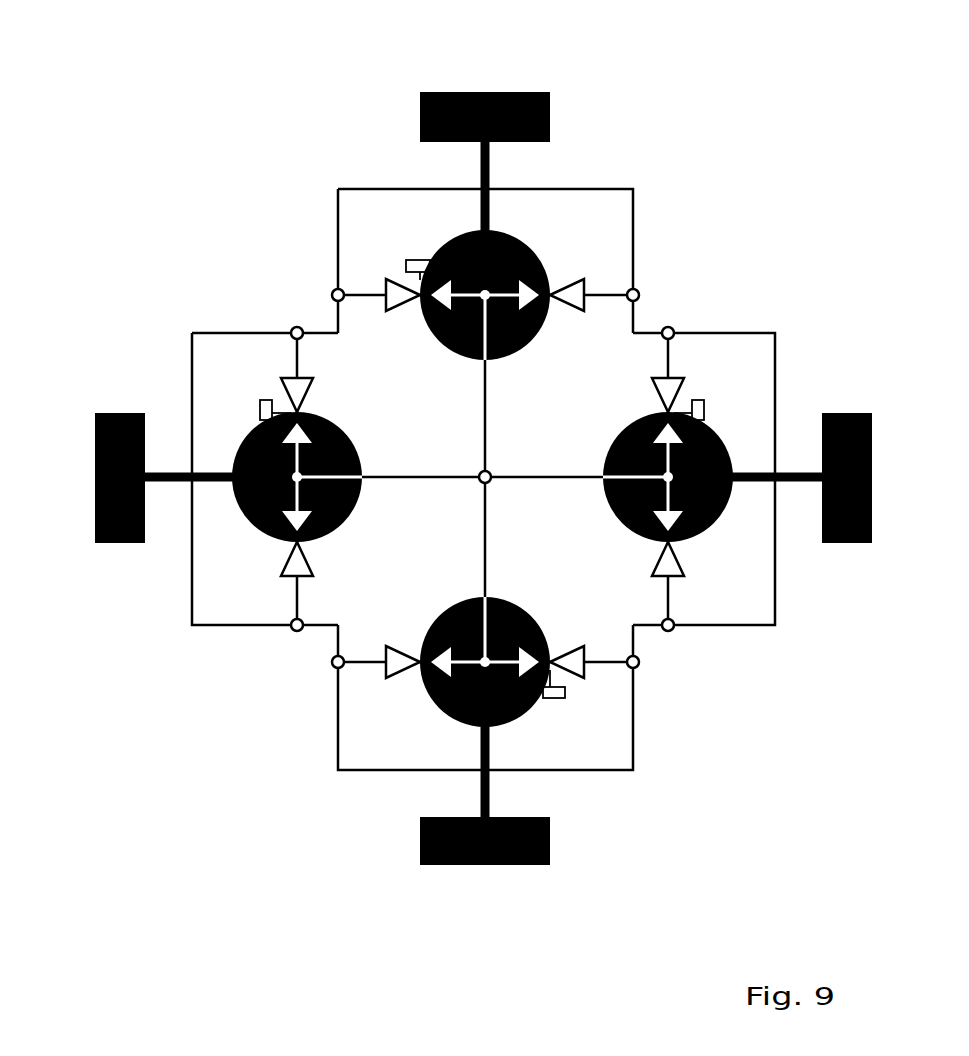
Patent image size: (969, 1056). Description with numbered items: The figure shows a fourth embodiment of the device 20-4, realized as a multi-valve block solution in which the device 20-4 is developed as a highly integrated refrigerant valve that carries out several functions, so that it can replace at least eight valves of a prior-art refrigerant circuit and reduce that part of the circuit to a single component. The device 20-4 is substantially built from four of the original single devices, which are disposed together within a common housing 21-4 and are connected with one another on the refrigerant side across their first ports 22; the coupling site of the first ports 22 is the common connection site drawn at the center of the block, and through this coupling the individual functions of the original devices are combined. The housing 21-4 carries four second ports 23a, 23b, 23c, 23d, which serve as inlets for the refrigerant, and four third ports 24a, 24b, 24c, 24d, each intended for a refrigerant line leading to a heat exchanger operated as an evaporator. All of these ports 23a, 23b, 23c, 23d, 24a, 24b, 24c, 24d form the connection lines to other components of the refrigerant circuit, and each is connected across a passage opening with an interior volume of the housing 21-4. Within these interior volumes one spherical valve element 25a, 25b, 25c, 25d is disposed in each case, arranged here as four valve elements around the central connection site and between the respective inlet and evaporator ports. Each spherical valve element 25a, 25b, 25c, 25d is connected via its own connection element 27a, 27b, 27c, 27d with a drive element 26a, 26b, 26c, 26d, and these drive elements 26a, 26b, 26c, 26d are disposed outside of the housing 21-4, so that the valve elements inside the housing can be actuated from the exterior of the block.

The device 20-4 is at (832, 84).
The housing 21-4 is at (356, 230).
The first port 22 is at (489, 473).
The second port 23a is at (292, 630).
The second port 23b is at (672, 630).
The second port 23c is at (637, 291).
The second port 23d is at (335, 666).
The third port 24a is at (293, 329).
The third port 24b is at (672, 329).
The third port 24c is at (333, 291).
The third port 24d is at (637, 666).
The valve element 25a is at (243, 517).
The valve element 25b is at (723, 515).
The valve element 25c is at (523, 240).
The valve element 25d is at (443, 713).
The drive element 26a is at (95, 413).
The drive element 26b is at (872, 540).
The drive element 26c is at (448, 92).
The drive element 26d is at (448, 865).
The connection element 27a is at (175, 473).
The connection element 27b is at (790, 472).
The connection element 27c is at (478, 168).
The connection element 27d is at (490, 783).